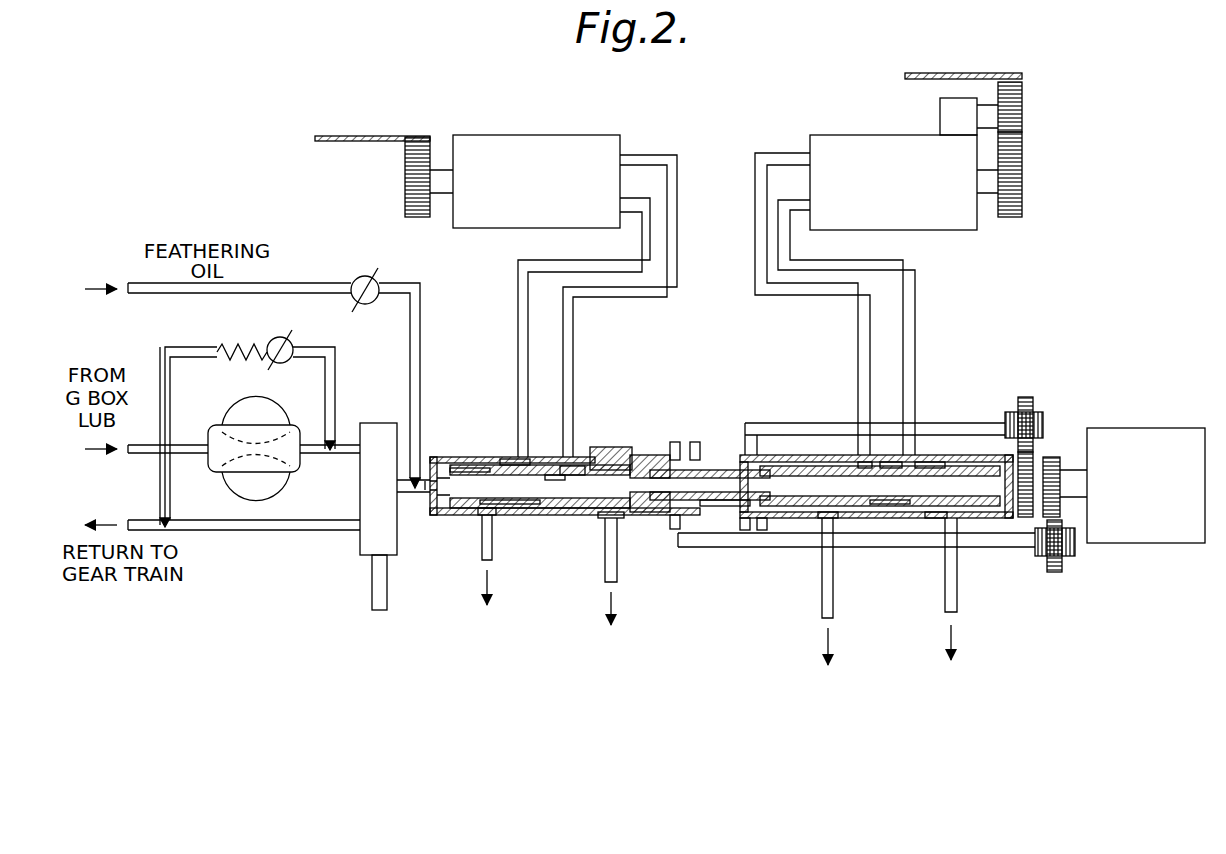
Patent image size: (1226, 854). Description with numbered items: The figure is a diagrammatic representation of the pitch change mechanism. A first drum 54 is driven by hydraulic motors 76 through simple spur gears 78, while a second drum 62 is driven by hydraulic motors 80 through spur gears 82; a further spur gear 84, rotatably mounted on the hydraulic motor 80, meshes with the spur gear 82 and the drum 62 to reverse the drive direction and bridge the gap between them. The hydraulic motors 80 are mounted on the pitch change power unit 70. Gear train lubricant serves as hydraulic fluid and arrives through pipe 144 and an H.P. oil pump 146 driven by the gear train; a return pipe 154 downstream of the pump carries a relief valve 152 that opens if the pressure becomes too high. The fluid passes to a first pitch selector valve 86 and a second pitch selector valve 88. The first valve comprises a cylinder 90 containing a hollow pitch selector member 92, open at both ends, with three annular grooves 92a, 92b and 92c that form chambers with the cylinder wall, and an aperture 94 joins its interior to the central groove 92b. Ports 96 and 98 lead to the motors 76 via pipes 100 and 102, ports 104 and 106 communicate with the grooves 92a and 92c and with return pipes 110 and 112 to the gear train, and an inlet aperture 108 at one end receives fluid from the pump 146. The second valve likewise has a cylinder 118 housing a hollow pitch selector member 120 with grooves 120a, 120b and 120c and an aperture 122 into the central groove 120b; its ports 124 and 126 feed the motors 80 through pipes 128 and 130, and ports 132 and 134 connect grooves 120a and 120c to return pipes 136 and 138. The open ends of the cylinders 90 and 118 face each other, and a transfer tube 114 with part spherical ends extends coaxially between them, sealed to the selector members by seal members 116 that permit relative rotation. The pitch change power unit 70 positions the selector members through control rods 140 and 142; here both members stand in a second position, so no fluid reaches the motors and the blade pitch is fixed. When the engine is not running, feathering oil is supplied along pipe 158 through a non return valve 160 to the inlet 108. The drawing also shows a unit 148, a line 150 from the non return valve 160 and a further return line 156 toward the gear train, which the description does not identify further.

The first drum 54 is at (370, 136).
The second drum 62 is at (955, 73).
The pitch change power unit 70 is at (1146, 485).
The hydraulic motors 76 is at (536, 181).
The spur gears 78 is at (408, 178).
The hydraulic motors 80 is at (893, 182).
The spur gears 82 is at (1022, 183).
The further spur gear 84 is at (1022, 112).
The first pitch selector valve 86 is at (514, 438).
The second pitch selector valve 88 is at (838, 410).
The cylinder 90 is at (462, 516).
The pitch selector member 92 is at (640, 455).
The annular groove 92a is at (470, 457).
The central annular groove 92b is at (545, 509).
The annular groove 92c is at (620, 448).
The aperture 94 is at (572, 460).
The port 96 is at (505, 458).
The port 98 is at (560, 465).
The pipe 100 is at (518, 297).
The pipe 102 is at (652, 298).
The port 104 is at (497, 516).
The port 106 is at (620, 520).
The inlet aperture 108 is at (435, 518).
The return pipe 110 is at (480, 556).
The return pipe 112 is at (605, 575).
The transfer tube 114 is at (715, 468).
The seal members 116 is at (740, 506).
The cylinder 118 is at (1012, 530).
The pitch selector member 120 is at (972, 519).
The annular groove 120a is at (800, 455).
The central annular groove 120b is at (890, 518).
The annular groove 120c is at (1030, 475).
The aperture 122 is at (895, 460).
The port 124 is at (868, 458).
The port 126 is at (925, 458).
The pipe 128 is at (800, 295).
The pipe 130 is at (915, 276).
The port 132 is at (840, 522).
The port 134 is at (930, 520).
The return pipe 136 is at (822, 575).
The return pipe 138 is at (957, 596).
The control rod 140 is at (752, 540).
The control rod 142 is at (1040, 410).
The pipe 144 is at (146, 454).
The H.P. oil pump 146 is at (250, 497).
The control valve 148 is at (360, 491).
The feathering oil line 150 is at (407, 430).
The relief valve 152 is at (283, 348).
The return pipe 154 is at (170, 415).
The return line 156 is at (322, 531).
The pipe 158 is at (156, 294).
The non return valve 160 is at (367, 290).